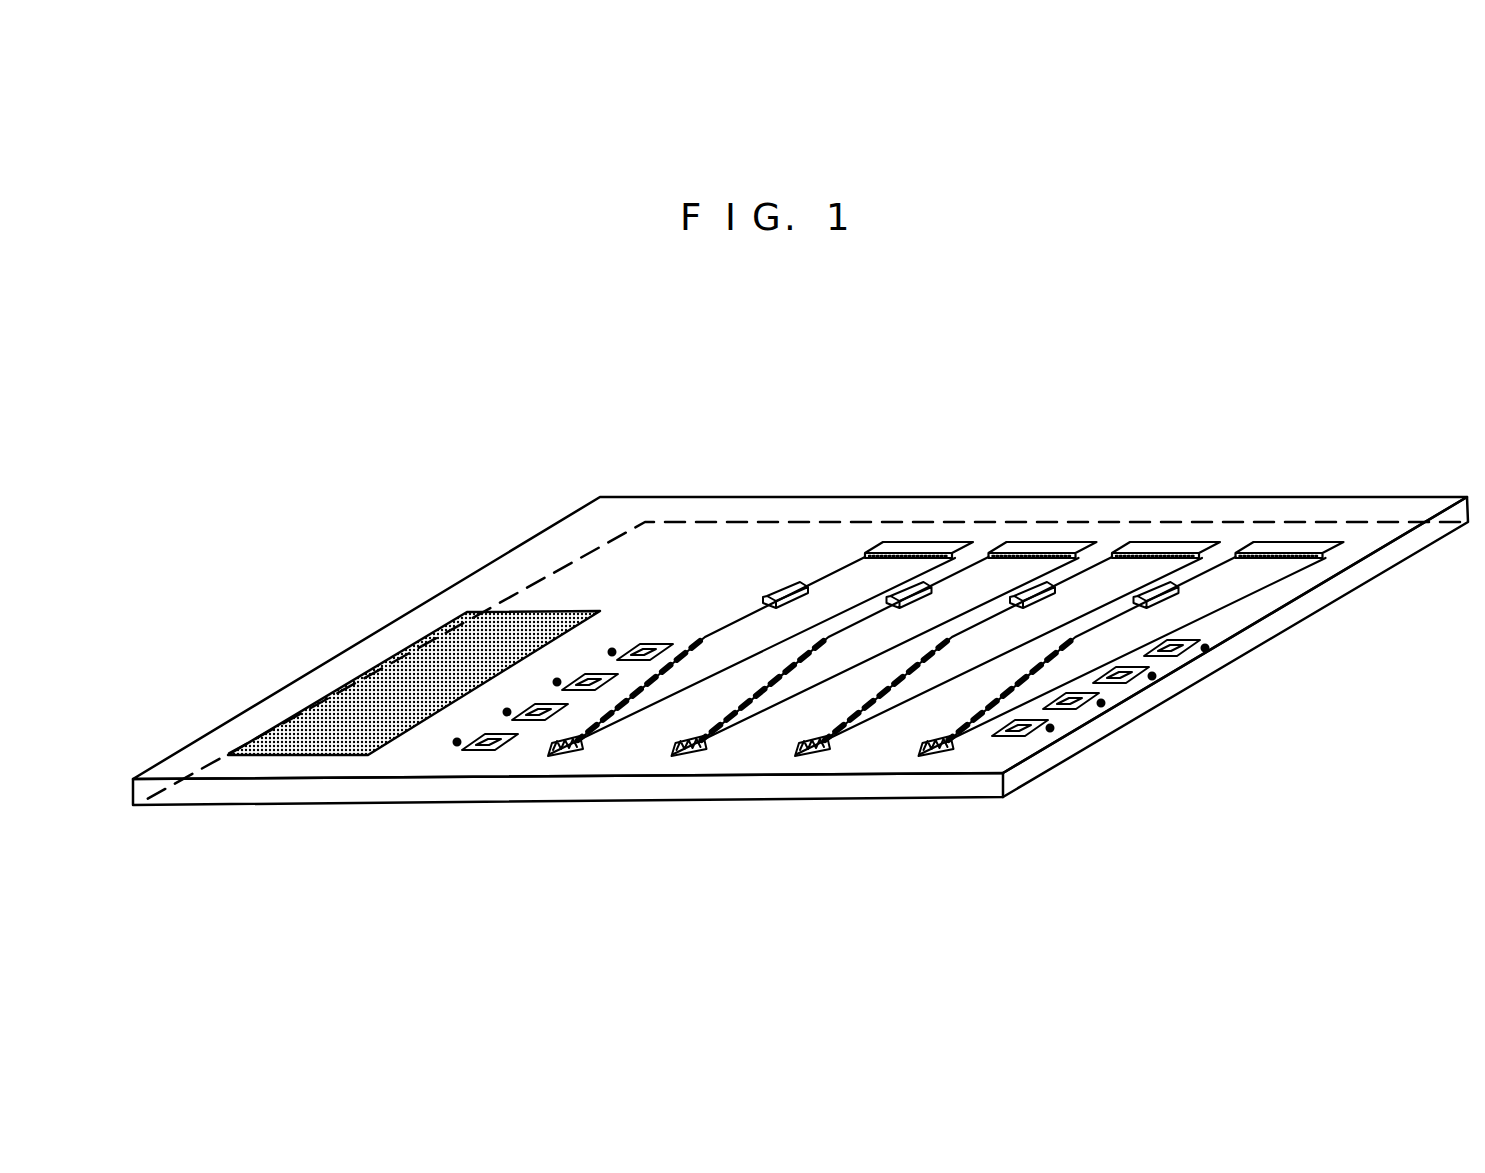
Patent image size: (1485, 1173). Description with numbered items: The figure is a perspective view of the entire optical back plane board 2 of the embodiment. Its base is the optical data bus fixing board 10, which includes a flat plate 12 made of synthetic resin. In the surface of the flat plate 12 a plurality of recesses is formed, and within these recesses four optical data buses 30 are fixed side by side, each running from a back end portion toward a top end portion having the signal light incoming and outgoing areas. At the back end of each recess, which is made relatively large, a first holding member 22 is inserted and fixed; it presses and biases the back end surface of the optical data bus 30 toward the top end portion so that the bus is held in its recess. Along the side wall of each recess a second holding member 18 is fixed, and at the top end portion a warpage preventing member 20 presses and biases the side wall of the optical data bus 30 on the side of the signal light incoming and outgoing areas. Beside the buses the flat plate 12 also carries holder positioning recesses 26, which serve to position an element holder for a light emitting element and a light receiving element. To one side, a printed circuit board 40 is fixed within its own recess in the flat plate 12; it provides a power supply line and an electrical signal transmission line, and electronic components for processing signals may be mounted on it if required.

The optical back plane board 2 is at (1185, 396).
The optical data bus fixing board 10 is at (1273, 697).
The flat plate 12 is at (1370, 570).
The second holding member 18 is at (793, 583).
The warpage preventing member 20 is at (570, 737).
The first holding member 22 is at (915, 543).
The holder positioning recesses 26 is at (528, 720).
The optical data bus 30 is at (650, 705).
The printed circuit board 40 is at (393, 680).